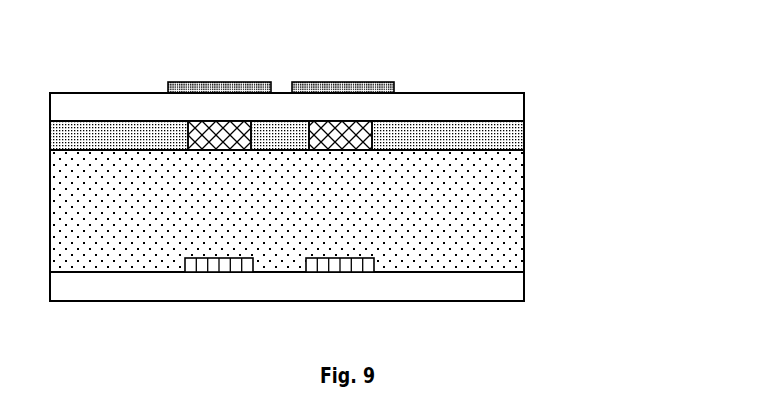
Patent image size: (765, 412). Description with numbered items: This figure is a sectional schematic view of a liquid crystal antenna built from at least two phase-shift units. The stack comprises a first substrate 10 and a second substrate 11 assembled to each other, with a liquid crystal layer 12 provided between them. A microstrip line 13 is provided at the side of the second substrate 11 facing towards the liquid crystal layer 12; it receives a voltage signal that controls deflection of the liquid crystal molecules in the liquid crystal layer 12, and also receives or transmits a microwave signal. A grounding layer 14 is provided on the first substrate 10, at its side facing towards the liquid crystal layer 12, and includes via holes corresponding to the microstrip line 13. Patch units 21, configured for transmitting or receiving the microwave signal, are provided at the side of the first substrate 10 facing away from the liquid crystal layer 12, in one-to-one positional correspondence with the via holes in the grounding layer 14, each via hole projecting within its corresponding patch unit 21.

The first substrate 10 is at (524, 109).
The grounding layer 14 is at (524, 137).
The liquid crystal layer 12 is at (524, 207).
The second substrate 11 is at (524, 284).
The microstrip line 13 is at (374, 263).
The patch unit 21 is at (394, 85).